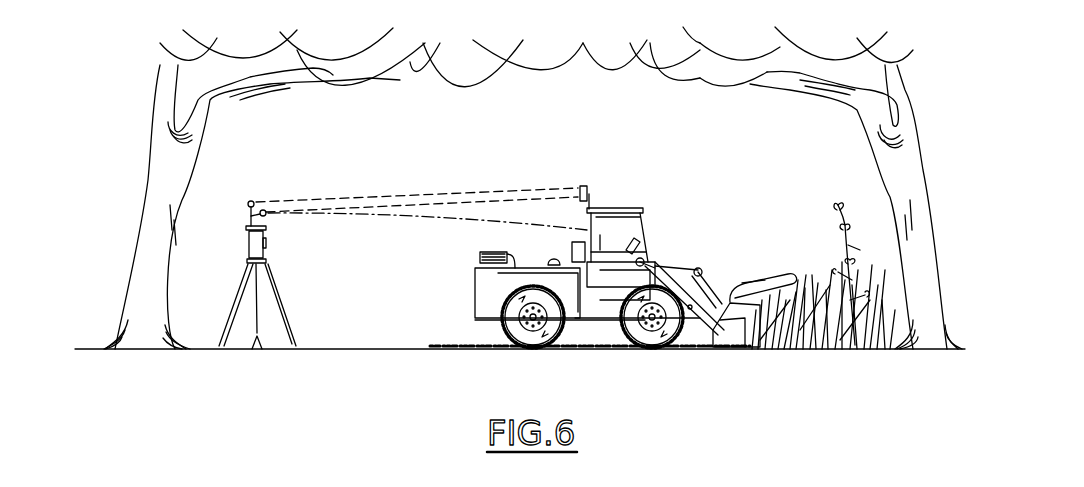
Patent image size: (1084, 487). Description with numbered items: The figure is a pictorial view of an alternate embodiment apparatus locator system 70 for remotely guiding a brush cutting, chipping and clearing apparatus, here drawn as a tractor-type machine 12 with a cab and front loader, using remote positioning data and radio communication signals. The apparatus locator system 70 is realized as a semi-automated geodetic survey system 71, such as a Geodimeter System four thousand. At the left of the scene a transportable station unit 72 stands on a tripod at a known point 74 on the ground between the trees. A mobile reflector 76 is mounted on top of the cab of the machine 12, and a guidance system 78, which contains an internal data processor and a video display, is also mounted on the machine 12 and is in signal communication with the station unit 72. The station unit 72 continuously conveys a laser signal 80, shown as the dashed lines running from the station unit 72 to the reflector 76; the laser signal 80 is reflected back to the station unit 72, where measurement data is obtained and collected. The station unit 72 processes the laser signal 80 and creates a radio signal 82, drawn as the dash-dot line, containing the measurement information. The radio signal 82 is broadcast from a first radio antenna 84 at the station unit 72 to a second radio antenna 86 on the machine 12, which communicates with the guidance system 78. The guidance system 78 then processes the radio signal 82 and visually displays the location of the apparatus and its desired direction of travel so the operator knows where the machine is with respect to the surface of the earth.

The work machine (tractor with loader) 12 is at (636, 277).
The apparatus locator system 70 is at (580, 180).
The semi-automated geodetic survey system 71 is at (434, 148).
The transportable station unit 72 is at (249, 253).
The known point 74 is at (246, 349).
The mobile reflector 76 is at (590, 183).
The guidance system 78 is at (644, 248).
The laser signal 80 is at (473, 202).
The radio signal 82 is at (380, 212).
The first radio antenna 84 is at (267, 218).
The second radio antenna 86 is at (640, 243).